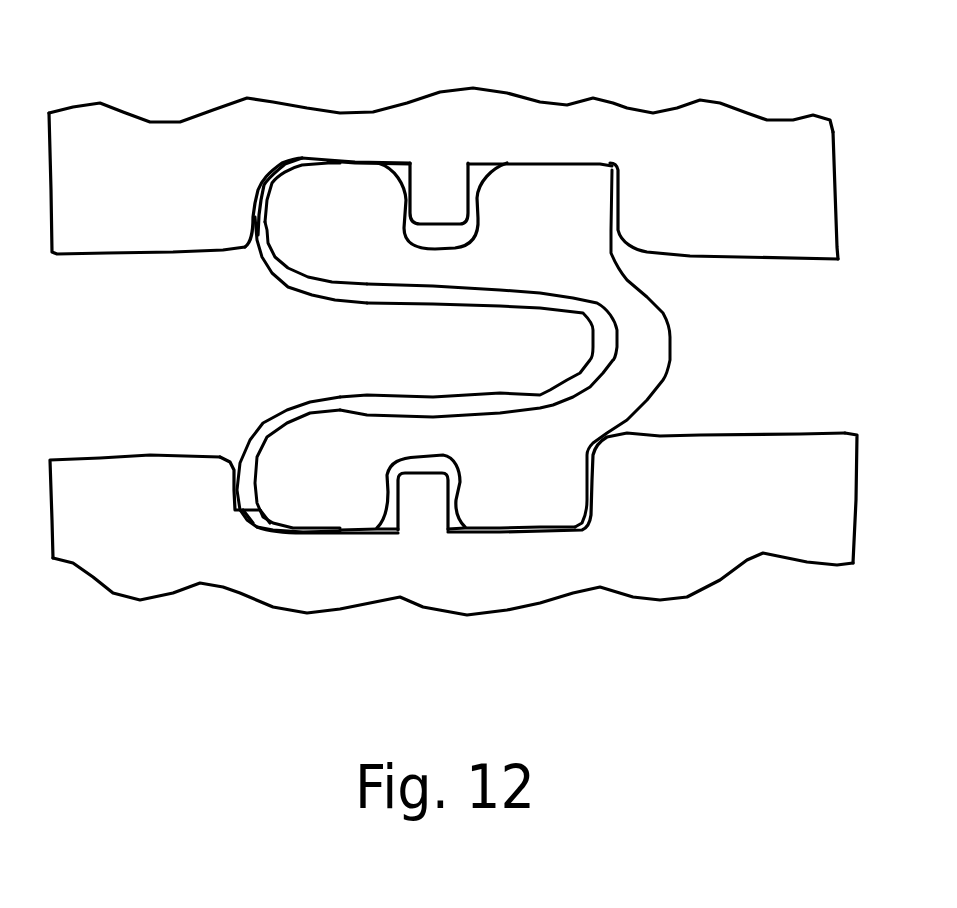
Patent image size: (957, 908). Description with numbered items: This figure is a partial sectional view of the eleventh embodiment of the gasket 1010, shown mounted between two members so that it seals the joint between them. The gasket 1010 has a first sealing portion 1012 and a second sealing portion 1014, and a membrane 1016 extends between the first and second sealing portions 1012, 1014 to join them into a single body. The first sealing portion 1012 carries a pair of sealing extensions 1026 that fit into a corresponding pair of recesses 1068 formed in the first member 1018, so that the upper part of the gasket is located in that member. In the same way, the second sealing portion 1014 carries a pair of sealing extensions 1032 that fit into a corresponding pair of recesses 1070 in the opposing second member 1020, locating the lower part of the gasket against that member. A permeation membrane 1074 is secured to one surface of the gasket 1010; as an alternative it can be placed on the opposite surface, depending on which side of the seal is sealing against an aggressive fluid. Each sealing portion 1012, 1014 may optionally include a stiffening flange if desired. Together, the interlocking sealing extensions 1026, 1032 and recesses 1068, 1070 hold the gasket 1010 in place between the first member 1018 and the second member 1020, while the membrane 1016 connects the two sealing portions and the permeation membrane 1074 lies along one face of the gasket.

The gasket 1010 is at (742, 345).
The first sealing portion 1012 is at (250, 287).
The second sealing portion 1014 is at (234, 423).
The S-shaped connecting member 1016 is at (669, 366).
The first member 1018 is at (699, 106).
The second panel 1020 is at (703, 597).
The sealing extensions 1026 is at (333, 160).
The sealing extensions 1032 is at (333, 530).
The recesses 1068 is at (378, 163).
The recesses 1070 is at (273, 527).
The permeation membrane 1074 is at (443, 305).